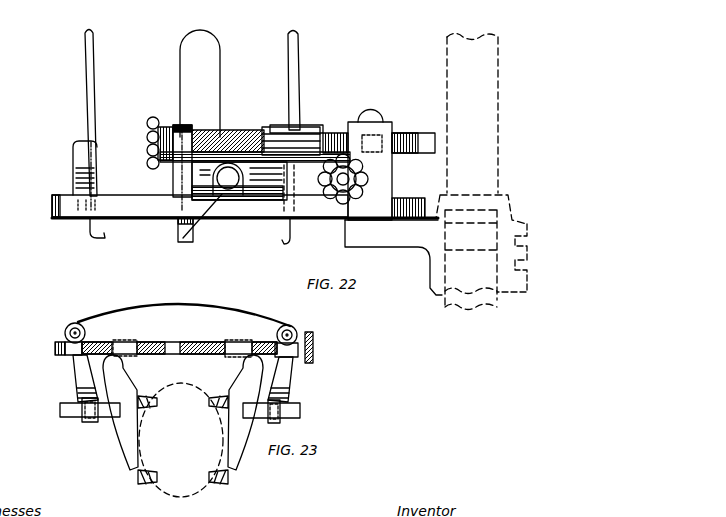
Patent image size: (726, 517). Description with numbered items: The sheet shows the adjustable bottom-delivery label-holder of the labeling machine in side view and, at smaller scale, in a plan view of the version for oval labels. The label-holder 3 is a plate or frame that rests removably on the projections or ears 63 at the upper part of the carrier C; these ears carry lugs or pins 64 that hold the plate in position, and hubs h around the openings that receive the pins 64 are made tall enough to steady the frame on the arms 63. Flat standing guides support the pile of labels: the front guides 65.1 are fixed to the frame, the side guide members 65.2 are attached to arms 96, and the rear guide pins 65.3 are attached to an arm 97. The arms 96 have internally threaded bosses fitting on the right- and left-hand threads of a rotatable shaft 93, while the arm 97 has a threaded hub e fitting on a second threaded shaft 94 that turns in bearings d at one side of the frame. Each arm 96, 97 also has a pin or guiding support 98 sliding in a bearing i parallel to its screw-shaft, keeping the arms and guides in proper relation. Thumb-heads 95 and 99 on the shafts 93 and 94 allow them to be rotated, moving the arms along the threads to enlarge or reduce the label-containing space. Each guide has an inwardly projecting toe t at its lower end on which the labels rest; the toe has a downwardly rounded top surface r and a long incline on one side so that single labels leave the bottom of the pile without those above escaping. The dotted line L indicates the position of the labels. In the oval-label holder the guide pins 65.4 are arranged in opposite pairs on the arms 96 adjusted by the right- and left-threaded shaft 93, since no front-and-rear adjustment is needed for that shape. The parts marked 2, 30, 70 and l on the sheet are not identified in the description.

In FIG. 22, the label-holder 3 is at (245, 206).
In FIG. 23, the label-holder 3 is at (184, 318).
In FIG. 22, the machine frame member 2 is at (471, 265).
In FIG. 22, the toothed rack member 30 is at (525, 258).
In FIG. 22, the projections or ears 63 is at (393, 257).
In FIG. 22, the lugs or pins 64 is at (370, 115).
In FIG. 23, the lugs or pins 64 is at (68, 328).
In FIG. 22, the front label-supporting guides 65.1 is at (102, 121).
In FIG. 22, the side guide members 65.2 is at (200, 83).
In FIG. 22, the rear guide pins 65.3 is at (311, 81).
In FIG. 23, the guide pins 65.4 is at (183, 452).
In FIG. 22, the upright post 70 is at (481, 129).
In FIG. 22, the rotatable shaft 93 is at (341, 193).
In FIG. 23, the rotatable shaft 93 is at (184, 352).
In FIG. 22, the second threaded shaft 94 is at (235, 132).
In FIG. 22, the thumb-head 95 is at (357, 191).
In FIG. 23, the thumb-head 95 is at (313, 350).
In FIG. 22, the arms 96 is at (250, 178).
In FIG. 23, the arms 96 is at (124, 444).
In FIG. 22, the arm 97 is at (297, 128).
In FIG. 22, the pin or guiding support 98 is at (428, 146).
In FIG. 23, the pin or guiding support 98 is at (306, 411).
In FIG. 22, the thumb-head 99 is at (155, 135).
In FIG. 22, the carrier C is at (466, 275).
In FIG. 23, the dotted line L is at (181, 449).
In FIG. 22, the bearings d is at (180, 174).
In FIG. 22, the threaded hub e is at (290, 143).
In FIG. 22, the hubs h is at (386, 166).
In FIG. 23, the hubs h is at (63, 333).
In FIG. 23, the bearing i is at (86, 414).
In FIG. 23, the hanger bracket l is at (72, 352).
In FIG. 22, the downwardly rounded top surface r is at (106, 236).
In FIG. 22, the toe or point t is at (188, 251).
In FIG. 23, the toe or point t is at (178, 440).